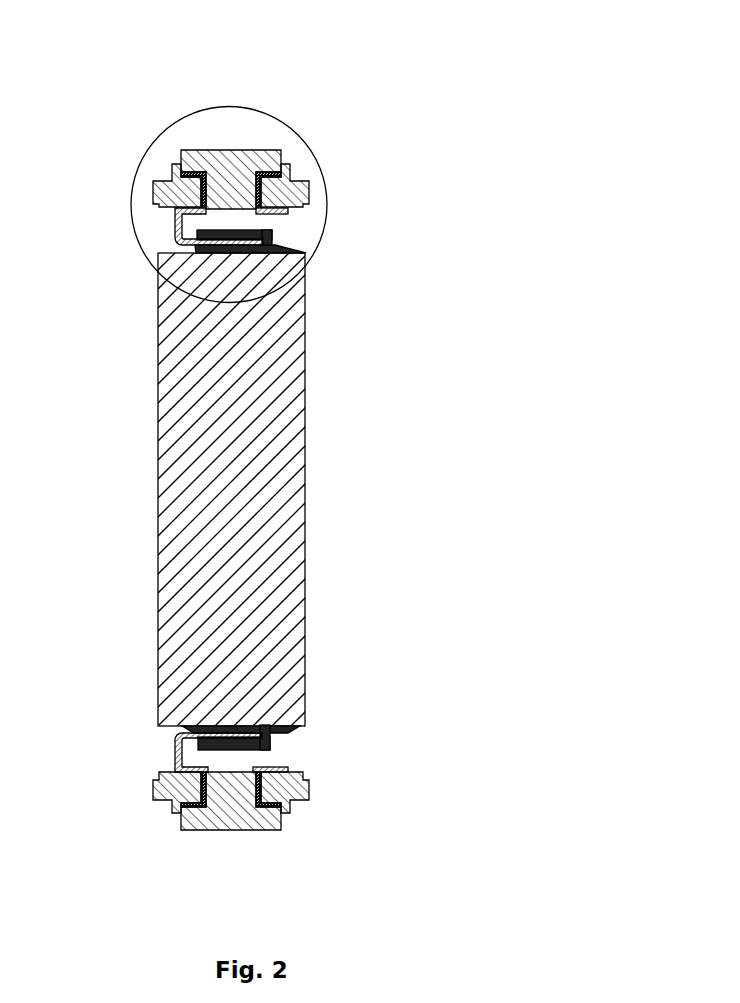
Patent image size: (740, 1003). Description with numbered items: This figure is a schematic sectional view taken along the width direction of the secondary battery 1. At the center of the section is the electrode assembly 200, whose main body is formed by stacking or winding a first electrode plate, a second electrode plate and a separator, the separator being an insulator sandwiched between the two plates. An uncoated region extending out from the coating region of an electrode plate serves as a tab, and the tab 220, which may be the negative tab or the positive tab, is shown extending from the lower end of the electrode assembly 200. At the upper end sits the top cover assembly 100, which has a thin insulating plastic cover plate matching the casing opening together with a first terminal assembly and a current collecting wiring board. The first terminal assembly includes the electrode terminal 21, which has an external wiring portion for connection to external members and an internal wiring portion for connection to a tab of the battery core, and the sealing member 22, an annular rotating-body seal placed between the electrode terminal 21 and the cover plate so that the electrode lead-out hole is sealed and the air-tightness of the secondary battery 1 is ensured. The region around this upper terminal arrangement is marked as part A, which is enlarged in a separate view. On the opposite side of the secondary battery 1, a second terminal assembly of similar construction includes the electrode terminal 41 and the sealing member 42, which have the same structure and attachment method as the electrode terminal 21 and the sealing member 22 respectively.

The secondary battery 1 is at (343, 89).
The top cover assembly 100 is at (312, 162).
The part A is at (136, 168).
The electrode terminal 21 is at (227, 180).
The sealing member 22 is at (208, 177).
The electrode assembly 200 is at (275, 503).
The tab 220 is at (270, 742).
The electrode terminal 41 is at (233, 813).
The sealing member 42 is at (281, 806).